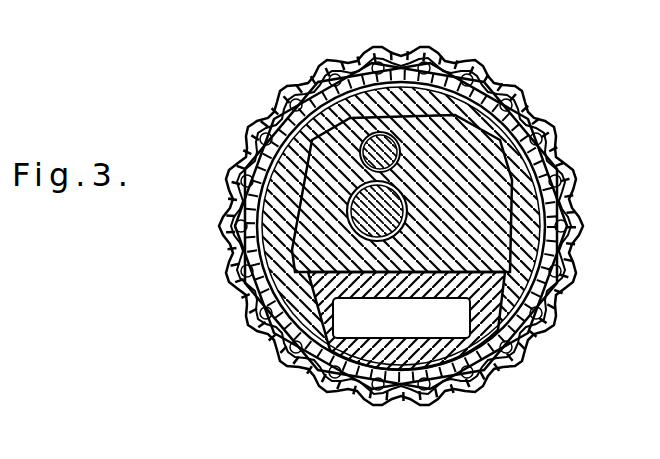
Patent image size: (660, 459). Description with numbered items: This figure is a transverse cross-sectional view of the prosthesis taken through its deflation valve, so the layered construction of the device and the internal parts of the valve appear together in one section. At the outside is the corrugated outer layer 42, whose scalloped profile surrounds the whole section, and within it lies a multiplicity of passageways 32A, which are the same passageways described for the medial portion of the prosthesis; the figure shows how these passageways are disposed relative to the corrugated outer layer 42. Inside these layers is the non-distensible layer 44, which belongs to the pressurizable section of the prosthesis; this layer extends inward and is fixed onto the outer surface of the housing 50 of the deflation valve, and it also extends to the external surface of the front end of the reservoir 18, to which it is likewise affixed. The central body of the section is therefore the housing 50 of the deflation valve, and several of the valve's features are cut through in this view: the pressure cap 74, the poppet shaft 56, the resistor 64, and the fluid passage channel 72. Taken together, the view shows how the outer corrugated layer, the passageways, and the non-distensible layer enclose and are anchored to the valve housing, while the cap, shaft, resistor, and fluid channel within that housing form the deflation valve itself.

The reservoir 18 is at (510, 123).
The passageways 32A is at (264, 74).
The corrugated outer layer 42 is at (575, 232).
The non-distensible layer 44 is at (350, 222).
The housing 50 is at (497, 195).
The poppet shaft 56 is at (300, 236).
The resistor 64 is at (380, 133).
The fluid passage channel 72 is at (445, 320).
The pressure cap 74 is at (510, 295).